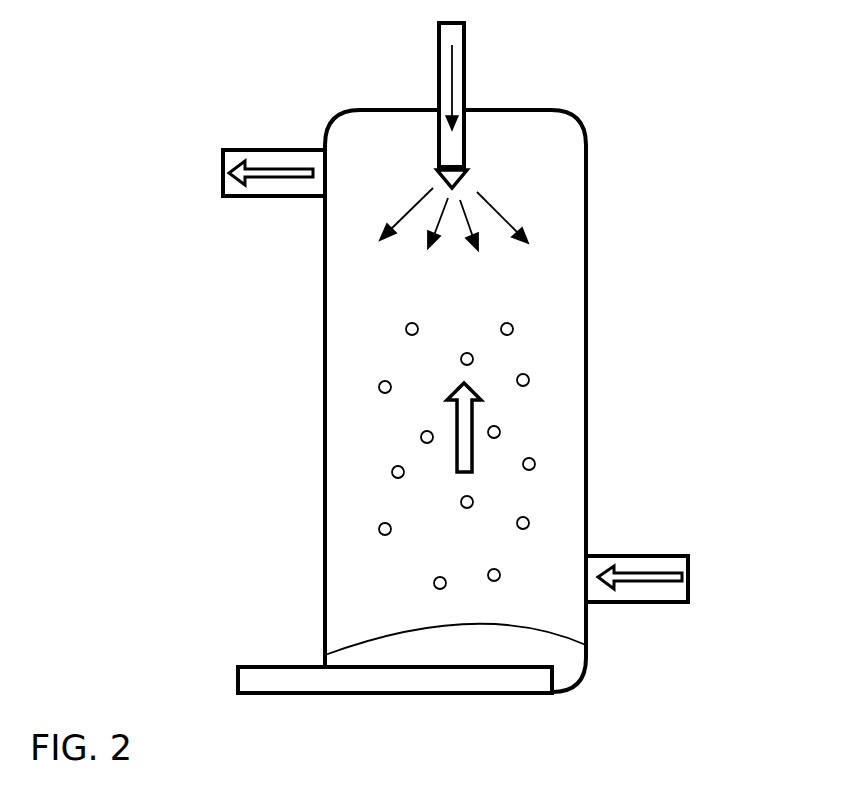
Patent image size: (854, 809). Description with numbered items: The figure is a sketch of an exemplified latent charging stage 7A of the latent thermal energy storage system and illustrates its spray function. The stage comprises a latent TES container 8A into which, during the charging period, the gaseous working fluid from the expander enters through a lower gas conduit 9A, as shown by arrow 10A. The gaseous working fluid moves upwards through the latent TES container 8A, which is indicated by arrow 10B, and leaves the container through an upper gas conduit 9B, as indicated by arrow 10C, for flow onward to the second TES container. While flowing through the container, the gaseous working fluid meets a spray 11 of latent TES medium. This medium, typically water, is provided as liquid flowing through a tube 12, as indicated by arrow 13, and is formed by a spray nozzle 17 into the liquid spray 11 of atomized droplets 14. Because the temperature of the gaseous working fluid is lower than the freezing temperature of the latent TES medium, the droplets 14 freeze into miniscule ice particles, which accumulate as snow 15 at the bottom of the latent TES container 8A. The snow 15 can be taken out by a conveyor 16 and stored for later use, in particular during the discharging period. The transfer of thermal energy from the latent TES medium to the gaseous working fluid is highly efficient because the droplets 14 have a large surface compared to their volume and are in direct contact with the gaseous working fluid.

The latent charging stage 7A is at (150, 72).
The latent TES container 8A is at (587, 140).
The lower gas conduit 9A is at (646, 555).
The upper gas conduit 9B is at (240, 150).
The arrow 10A is at (667, 582).
The arrow 10B is at (474, 408).
The arrow 10C is at (275, 178).
The spray 11 is at (497, 203).
The tube 12 is at (437, 78).
The arrow 13 is at (465, 90).
The atomized droplets 14 is at (513, 333).
The snow 15 is at (560, 658).
The conveyor 16 is at (256, 665).
The spray nozzle 17 is at (460, 180).